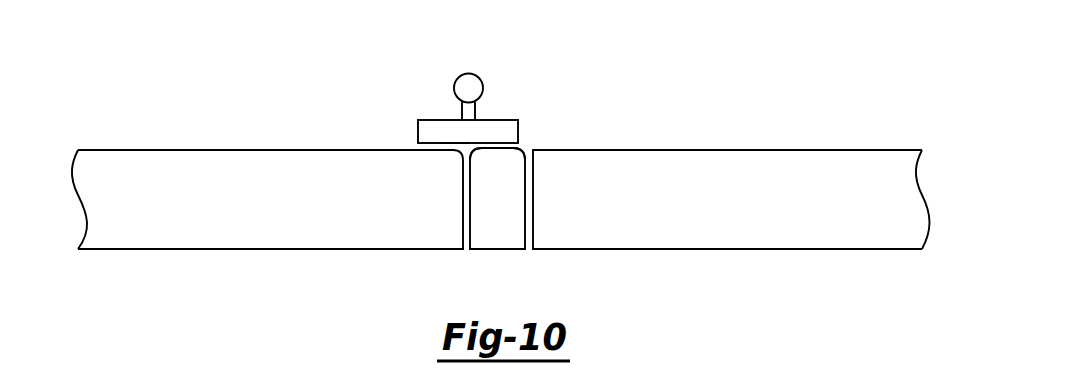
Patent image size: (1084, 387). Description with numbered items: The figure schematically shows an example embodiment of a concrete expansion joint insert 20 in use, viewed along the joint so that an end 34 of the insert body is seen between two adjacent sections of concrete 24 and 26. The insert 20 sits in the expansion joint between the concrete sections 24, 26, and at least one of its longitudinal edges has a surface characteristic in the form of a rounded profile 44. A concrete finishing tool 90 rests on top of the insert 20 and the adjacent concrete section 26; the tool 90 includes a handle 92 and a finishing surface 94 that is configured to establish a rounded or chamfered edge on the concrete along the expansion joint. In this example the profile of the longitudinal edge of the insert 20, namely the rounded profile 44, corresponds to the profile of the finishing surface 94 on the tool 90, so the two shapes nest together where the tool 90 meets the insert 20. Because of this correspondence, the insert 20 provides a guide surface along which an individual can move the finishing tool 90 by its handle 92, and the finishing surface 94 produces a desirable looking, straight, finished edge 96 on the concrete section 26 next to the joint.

The concrete expansion joint insert 20 is at (516, 188).
The section of concrete 24 is at (722, 209).
The section of concrete 26 is at (254, 210).
The end of the body 34 is at (500, 210).
The rounded profile 44 is at (522, 152).
The concrete finishing tool 90 is at (439, 99).
The handle 92 is at (468, 90).
The finishing surface 94 is at (487, 147).
The finished edge 96 is at (455, 143).